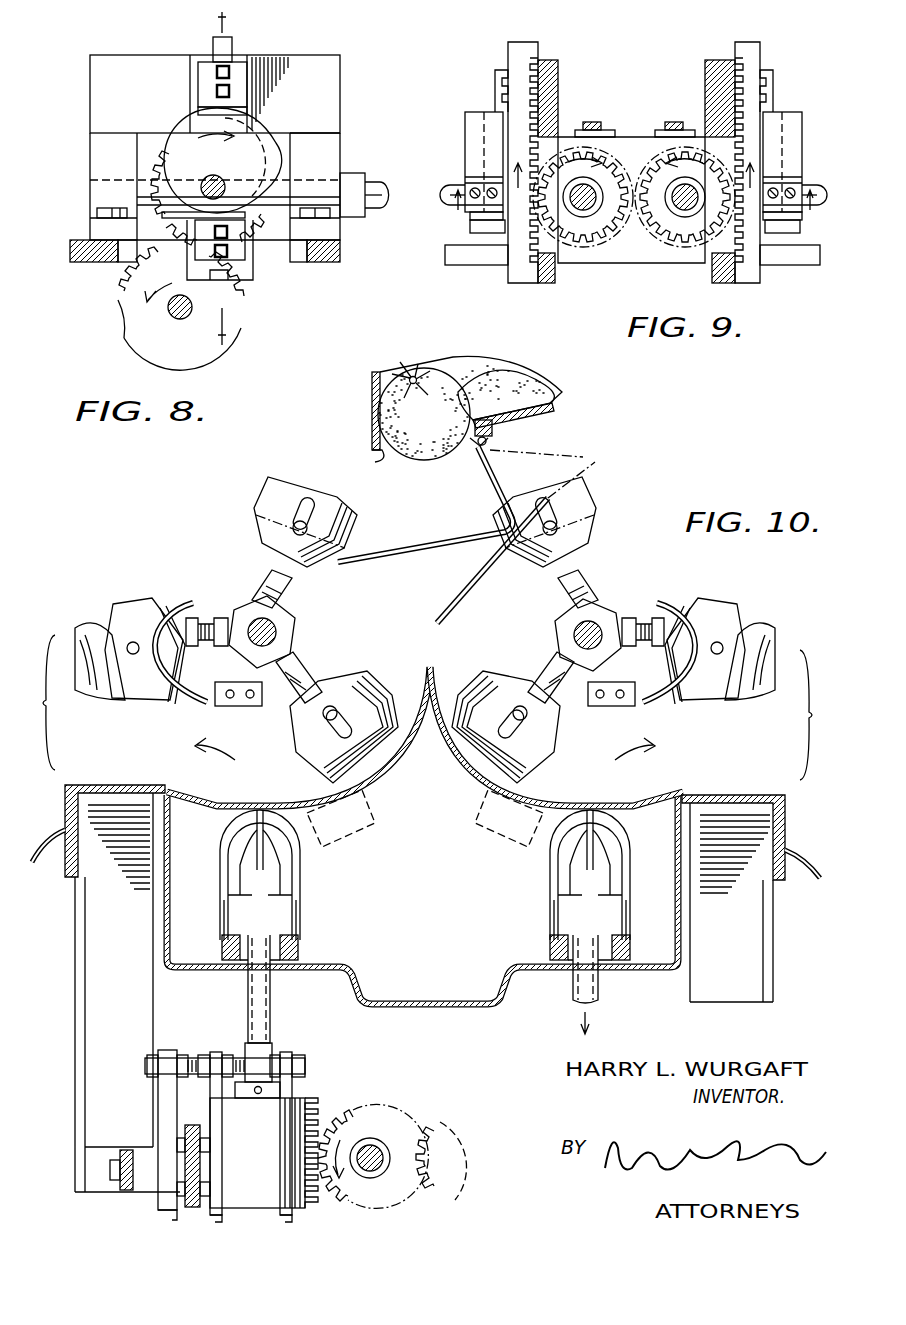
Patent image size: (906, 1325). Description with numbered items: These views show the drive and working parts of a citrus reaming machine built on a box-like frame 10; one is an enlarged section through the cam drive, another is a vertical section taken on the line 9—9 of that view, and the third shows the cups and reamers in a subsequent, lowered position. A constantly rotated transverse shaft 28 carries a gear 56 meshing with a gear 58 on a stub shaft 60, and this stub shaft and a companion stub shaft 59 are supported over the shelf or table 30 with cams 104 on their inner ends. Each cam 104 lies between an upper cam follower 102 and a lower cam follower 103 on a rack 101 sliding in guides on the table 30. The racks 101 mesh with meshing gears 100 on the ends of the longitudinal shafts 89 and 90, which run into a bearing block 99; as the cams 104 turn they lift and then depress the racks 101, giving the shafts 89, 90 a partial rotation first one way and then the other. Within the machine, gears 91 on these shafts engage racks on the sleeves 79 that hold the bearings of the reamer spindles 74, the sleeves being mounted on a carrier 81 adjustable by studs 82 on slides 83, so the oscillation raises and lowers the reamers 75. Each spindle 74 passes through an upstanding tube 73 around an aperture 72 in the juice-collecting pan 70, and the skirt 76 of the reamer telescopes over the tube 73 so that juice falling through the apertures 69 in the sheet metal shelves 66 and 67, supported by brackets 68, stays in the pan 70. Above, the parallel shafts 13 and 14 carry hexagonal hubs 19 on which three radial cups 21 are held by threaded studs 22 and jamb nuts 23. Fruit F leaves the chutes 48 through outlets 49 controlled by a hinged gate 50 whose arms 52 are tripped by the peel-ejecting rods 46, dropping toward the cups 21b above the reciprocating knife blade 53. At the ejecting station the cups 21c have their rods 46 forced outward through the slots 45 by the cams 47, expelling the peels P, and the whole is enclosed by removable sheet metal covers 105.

In FIG. 8, the section line 9— 9 is at (208, 339).
In FIG. 10, the frame 10 is at (70, 976).
In FIG. 10, the shaft 13 is at (600, 627).
In FIG. 10, the shaft 14 is at (280, 630).
In FIG. 10, the hexagonal hub 19 is at (245, 615).
In FIG. 10, the cup 21 is at (373, 684).
In FIG. 10, the cup at loading station 21b is at (280, 495).
In FIG. 10, the cup at peel-ejecting station 21c is at (130, 604).
In FIG. 10, the threaded stud 22 is at (285, 580).
In FIG. 10, the jamb nut 23 is at (300, 656).
In FIG. 8, the transverse shaft 28 is at (170, 310).
In FIG. 8, the shelf or table 30 is at (335, 250).
In FIG. 9, the shelf or table 30 is at (470, 258).
In FIG. 10, the slot 45 is at (318, 510).
In FIG. 10, the peel-ejecting rod 46 is at (298, 526).
In FIG. 10, the cam 47 is at (185, 700).
In FIG. 10, the chute 48 is at (372, 392).
In FIG. 10, the outlet 49 is at (372, 458).
In FIG. 10, the hinged gate 50 is at (494, 442).
In FIG. 10, the arm 52 is at (540, 462).
In FIG. 10, the knife blade 53 is at (438, 622).
In FIG. 8, the gear 56 is at (118, 278).
In FIG. 8, the gear 58 is at (155, 172).
In FIG. 8, the stub shaft 59 is at (213, 178).
In FIG. 9, the stub shaft 59 is at (808, 190).
In FIG. 9, the stub shaft 60 is at (452, 190).
In FIG. 10, the sheet metal shelf 66 is at (458, 762).
In FIG. 10, the sheet metal shelf 67 is at (395, 765).
In FIG. 10, the supporting bracket 68 is at (362, 820).
In FIG. 10, the aperture 69 is at (240, 810).
In FIG. 10, the juice-collecting pan 70 is at (345, 985).
In FIG. 10, the aperture 72 is at (272, 978).
In FIG. 10, the upstanding tube 73 is at (298, 950).
In FIG. 10, the reamer spindle 74 is at (250, 1004).
In FIG. 10, the reamer 75 is at (298, 848).
In FIG. 10, the skirt 76 is at (222, 948).
In FIG. 10, the sleeve 79 is at (238, 1160).
In FIG. 10, the carrier 81 is at (192, 1172).
In FIG. 10, the stud 82 is at (148, 1070).
In FIG. 10, the slide 83 is at (160, 1116).
In FIG. 8, the shaft 89 is at (374, 188).
In FIG. 9, the shaft 89 is at (690, 212).
In FIG. 9, the shaft 90 is at (590, 212).
In FIG. 10, the shaft 90 is at (372, 1140).
In FIG. 10, the gear 91 is at (412, 1132).
In FIG. 8, the bearing block 99 is at (318, 148).
In FIG. 9, the bearing block 99 is at (608, 137).
In FIG. 9, the meshing gear 100 is at (645, 165).
In FIG. 9, the rack 101 is at (522, 50).
In FIG. 8, the upper cam follower 102 is at (235, 78).
In FIG. 9, the upper cam follower 102 is at (495, 105).
In FIG. 8, the lower cam follower 103 is at (238, 218).
In FIG. 9, the lower cam follower 103 is at (478, 222).
In FIG. 8, the cam 104 is at (185, 150).
In FIG. 9, the cam 104 is at (470, 142).
In FIG. 10, the sheet metal cover 105 is at (48, 855).
In FIG. 10, the fruit F is at (432, 380).
In FIG. 10, the peel P is at (90, 630).